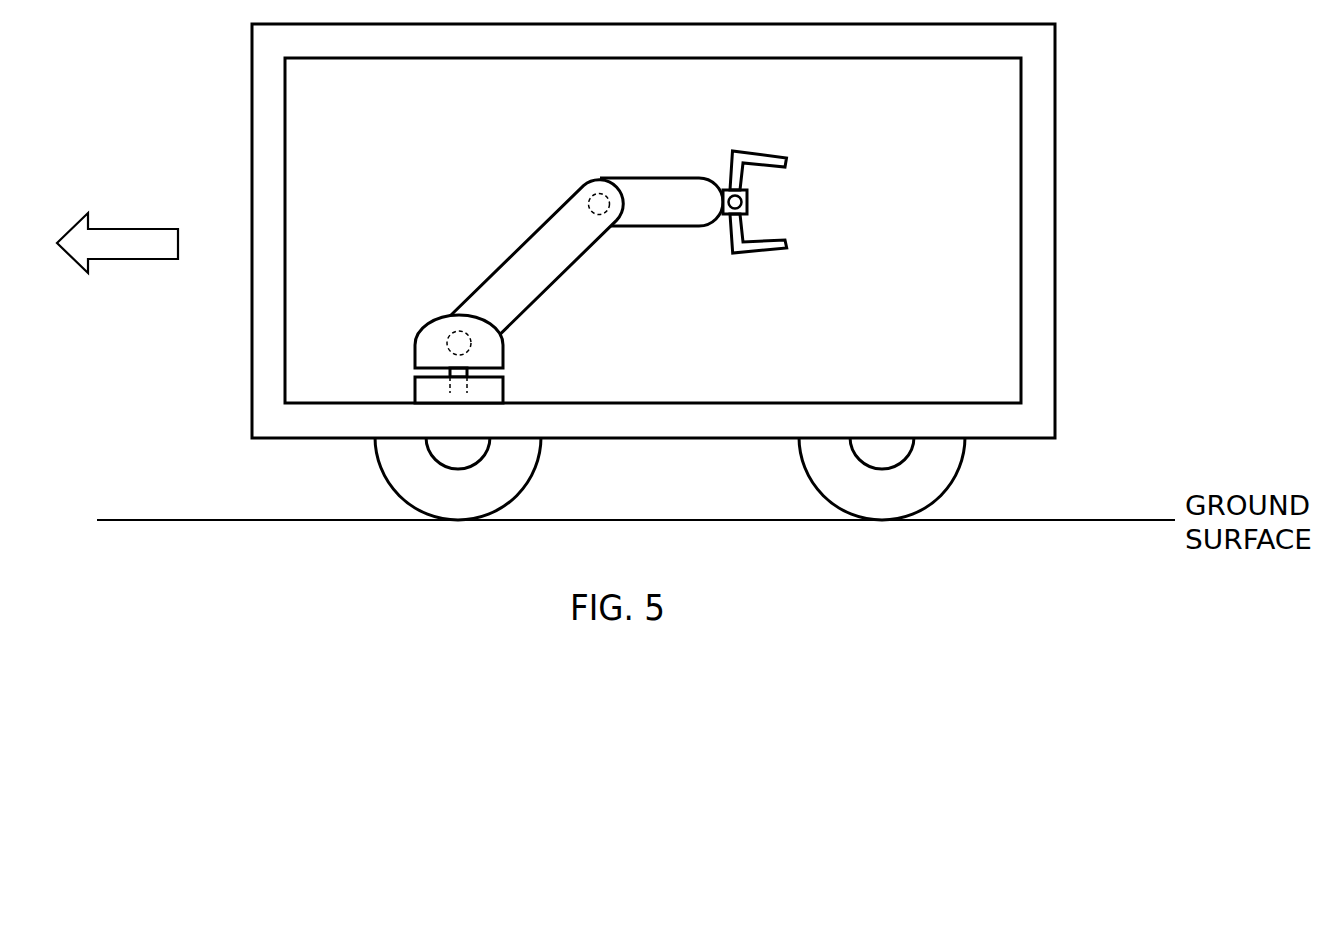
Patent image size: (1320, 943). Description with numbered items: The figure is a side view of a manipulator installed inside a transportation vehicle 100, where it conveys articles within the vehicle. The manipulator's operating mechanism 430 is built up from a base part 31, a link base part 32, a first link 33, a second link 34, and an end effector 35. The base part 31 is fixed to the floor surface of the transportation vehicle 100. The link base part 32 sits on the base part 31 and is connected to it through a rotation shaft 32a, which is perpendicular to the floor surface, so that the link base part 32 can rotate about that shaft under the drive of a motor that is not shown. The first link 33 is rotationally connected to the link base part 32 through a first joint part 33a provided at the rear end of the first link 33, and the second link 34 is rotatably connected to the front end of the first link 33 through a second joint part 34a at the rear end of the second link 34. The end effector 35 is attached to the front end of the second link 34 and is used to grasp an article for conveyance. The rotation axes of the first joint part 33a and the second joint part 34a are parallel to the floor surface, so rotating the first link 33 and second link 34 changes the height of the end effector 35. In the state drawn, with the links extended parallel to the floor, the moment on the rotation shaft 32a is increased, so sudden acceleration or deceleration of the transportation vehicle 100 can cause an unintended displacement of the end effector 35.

The transportation vehicle 100 is at (1055, 168).
The operating mechanism 430 is at (572, 253).
The base part 31 is at (417, 393).
The link base part 32 is at (423, 328).
The rotation shaft 32a is at (457, 393).
The first link 33 is at (518, 258).
The first joint part 33a is at (450, 330).
The second link 34 is at (665, 220).
The second joint part 34a is at (596, 184).
The end effector 35 is at (755, 253).